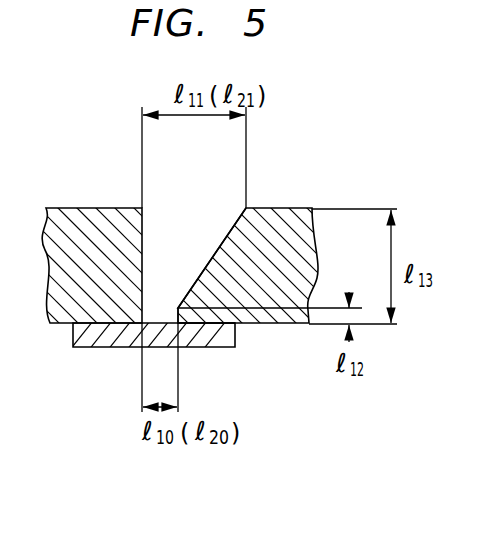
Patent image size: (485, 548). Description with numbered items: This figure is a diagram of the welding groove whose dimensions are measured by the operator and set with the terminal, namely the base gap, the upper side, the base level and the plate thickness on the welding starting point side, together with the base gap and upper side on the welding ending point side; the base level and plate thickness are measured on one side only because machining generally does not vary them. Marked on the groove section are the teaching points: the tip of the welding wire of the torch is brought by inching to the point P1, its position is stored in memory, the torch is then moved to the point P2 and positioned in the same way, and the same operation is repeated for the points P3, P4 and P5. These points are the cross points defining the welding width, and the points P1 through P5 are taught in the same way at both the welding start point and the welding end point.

The point P1 is at (135, 326).
The point P2 is at (184, 326).
The point P3 is at (176, 307).
The point P4 is at (247, 207).
The point P5 is at (140, 207).